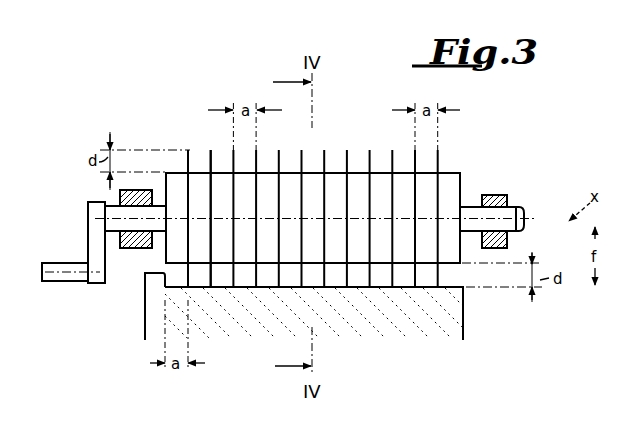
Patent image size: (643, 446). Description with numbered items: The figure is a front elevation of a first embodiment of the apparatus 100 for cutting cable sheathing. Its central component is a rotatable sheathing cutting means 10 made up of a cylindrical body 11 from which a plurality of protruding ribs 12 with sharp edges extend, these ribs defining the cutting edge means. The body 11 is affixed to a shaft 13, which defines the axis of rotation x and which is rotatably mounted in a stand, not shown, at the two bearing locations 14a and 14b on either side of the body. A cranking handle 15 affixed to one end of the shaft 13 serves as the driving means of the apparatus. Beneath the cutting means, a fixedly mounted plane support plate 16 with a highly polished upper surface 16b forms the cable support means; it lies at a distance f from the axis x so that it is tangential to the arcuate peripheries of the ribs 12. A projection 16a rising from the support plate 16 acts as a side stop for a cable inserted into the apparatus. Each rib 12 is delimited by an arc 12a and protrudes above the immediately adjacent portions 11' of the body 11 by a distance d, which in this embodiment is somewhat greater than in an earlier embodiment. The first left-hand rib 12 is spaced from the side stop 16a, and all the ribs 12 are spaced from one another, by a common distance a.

The apparatus 100 is at (161, 104).
The rotatable sheathing cutting means 10 is at (483, 176).
The cylindrical body 11 is at (322, 199).
The immediately adjacent portions of the body 11' is at (300, 146).
The protruding ribs 12 is at (370, 155).
The arc 12a is at (212, 148).
The shaft 13 is at (521, 215).
The bearing location 14a is at (137, 244).
The bearing location 14b is at (506, 200).
The cranking handle 15 is at (68, 272).
The support plate 16 is at (445, 336).
The projection 16a is at (155, 277).
The upper surface 16b is at (425, 287).